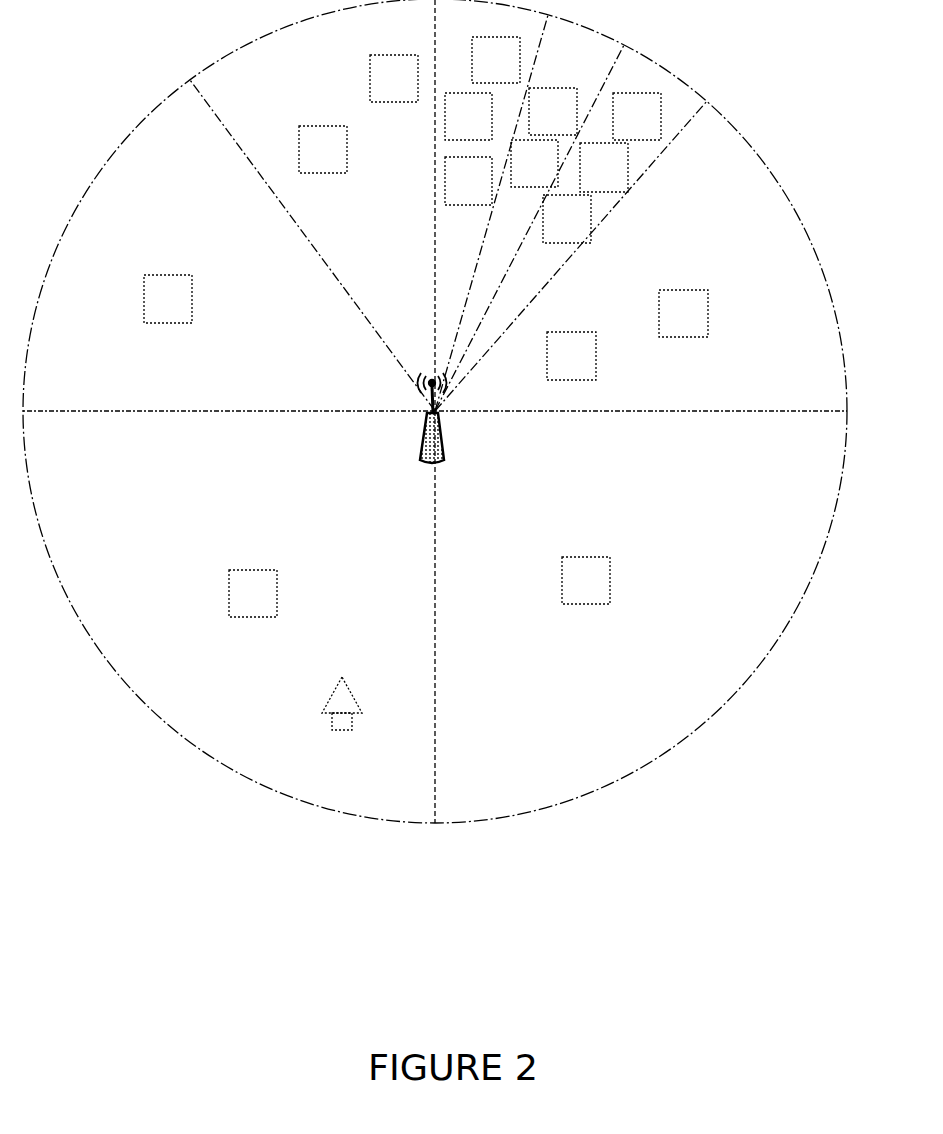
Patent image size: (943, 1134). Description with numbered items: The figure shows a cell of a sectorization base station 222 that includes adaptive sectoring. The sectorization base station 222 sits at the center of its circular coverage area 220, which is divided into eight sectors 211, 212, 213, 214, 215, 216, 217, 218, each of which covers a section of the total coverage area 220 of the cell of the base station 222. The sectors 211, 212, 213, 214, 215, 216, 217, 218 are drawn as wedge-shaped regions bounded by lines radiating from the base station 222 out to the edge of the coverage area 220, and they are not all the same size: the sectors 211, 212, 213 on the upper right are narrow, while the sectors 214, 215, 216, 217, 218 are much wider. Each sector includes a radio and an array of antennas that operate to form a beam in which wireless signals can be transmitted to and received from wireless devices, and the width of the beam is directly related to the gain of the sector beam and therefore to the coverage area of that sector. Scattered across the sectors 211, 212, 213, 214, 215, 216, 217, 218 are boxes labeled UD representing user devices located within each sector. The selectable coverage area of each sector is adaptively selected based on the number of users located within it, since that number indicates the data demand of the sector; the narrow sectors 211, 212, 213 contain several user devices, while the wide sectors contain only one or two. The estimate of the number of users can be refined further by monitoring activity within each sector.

The sector 211 is at (502, 31).
The sector 212 is at (588, 50).
The sector 213 is at (663, 86).
The sector 214 is at (748, 236).
The sector 215 is at (738, 533).
The sector 216 is at (296, 500).
The sector 217 is at (296, 349).
The sector 218 is at (373, 238).
The coverage area 220 is at (112, 136).
The sectorization base station 222 is at (424, 437).